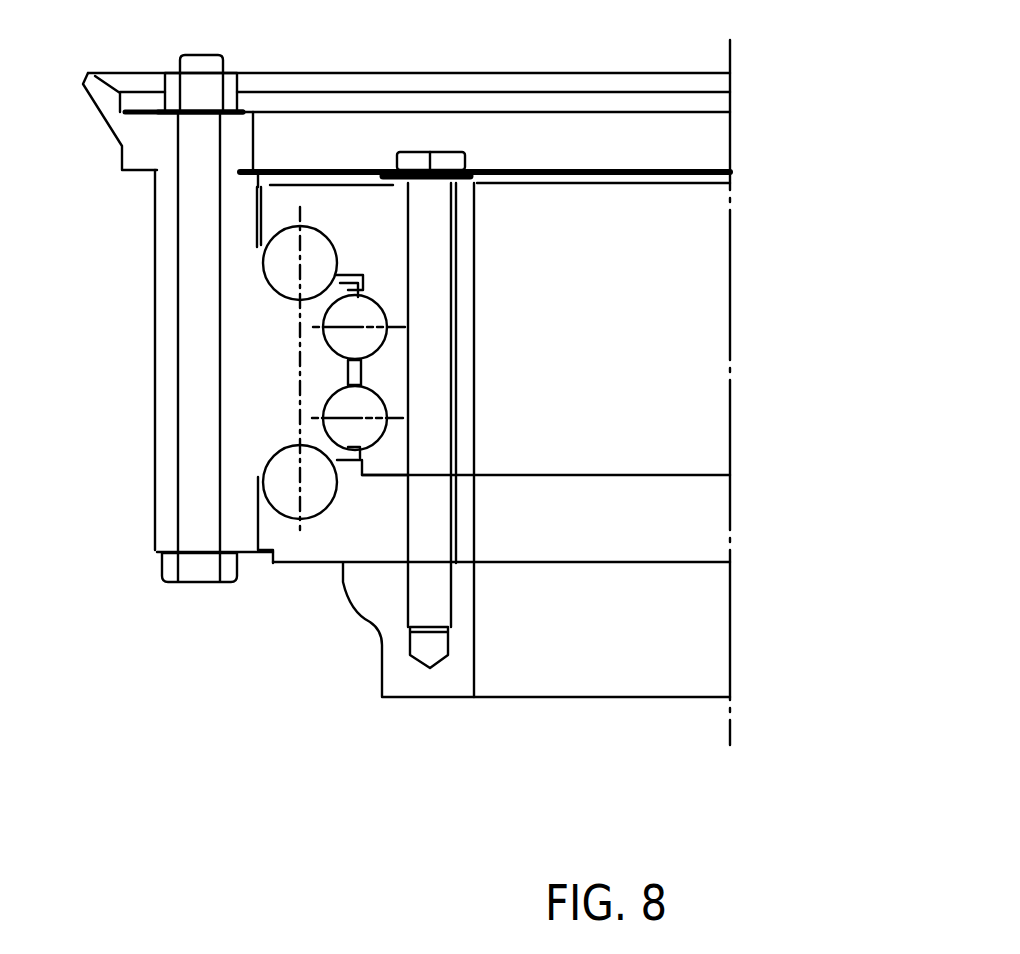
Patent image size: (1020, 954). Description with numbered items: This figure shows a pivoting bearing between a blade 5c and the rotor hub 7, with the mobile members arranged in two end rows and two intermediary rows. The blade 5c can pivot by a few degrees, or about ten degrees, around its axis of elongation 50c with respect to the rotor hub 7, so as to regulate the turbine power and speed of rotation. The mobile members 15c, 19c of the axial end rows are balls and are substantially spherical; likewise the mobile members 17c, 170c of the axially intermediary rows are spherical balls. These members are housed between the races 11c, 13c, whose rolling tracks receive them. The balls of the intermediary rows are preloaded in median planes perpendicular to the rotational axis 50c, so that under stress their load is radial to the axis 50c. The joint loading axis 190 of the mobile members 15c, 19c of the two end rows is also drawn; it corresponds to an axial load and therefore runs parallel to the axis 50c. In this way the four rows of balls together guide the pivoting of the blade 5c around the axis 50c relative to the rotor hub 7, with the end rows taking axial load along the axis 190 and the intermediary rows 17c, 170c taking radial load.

The rotor hub 7 is at (507, 77).
The joint loading axis 190 is at (297, 229).
The mobile member 15c is at (264, 253).
The mobile member 17c is at (377, 309).
The mobile member 170c is at (378, 410).
The mobile member 19c is at (313, 507).
The race 13c is at (476, 327).
The race 11c is at (160, 515).
The axis of elongation 50c is at (733, 340).
The blade 5c is at (428, 681).